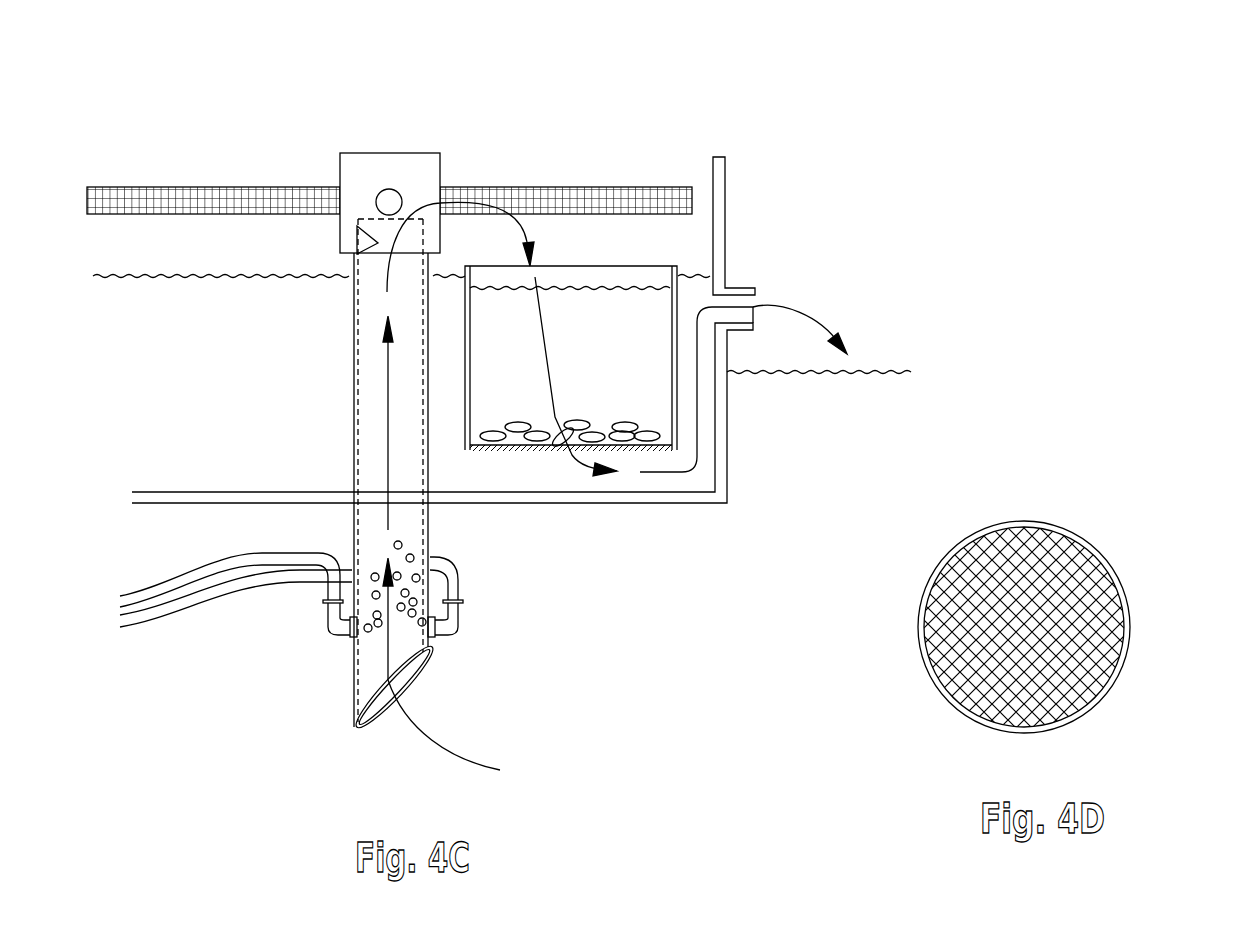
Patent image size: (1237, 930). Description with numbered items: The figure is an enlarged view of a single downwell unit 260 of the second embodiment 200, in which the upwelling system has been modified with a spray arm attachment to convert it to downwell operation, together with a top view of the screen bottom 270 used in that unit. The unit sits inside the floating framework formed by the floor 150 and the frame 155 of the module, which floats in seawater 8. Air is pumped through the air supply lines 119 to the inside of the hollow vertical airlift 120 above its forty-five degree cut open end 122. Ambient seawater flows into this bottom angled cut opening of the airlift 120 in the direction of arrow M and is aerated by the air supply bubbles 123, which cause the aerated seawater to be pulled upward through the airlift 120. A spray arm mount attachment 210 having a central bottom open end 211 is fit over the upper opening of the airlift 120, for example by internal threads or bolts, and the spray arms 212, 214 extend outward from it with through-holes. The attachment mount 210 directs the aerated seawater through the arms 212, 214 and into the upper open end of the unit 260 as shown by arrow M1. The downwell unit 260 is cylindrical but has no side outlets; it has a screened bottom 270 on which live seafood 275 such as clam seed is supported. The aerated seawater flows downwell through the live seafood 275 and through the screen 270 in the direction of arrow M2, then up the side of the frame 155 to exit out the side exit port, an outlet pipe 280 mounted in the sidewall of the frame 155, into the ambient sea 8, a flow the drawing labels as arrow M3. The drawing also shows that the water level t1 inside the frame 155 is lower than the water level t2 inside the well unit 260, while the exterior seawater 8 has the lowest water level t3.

In FIG. 4C, the second embodiment 200 is at (578, 74).
In FIG. 4C, the spray arm mount attachment 210 is at (378, 165).
In FIG. 4C, the central bottom open end 211 is at (377, 243).
In FIG. 4C, the spray arm 212 is at (177, 187).
In FIG. 4C, the spray arm 214 is at (580, 187).
In FIG. 4C, the frame 155 is at (718, 213).
In FIG. 4C, the outlet pipe 280 is at (737, 288).
In FIG. 4C, the downwell unit 260 is at (465, 345).
In FIG. 4C, the screened bottom 270 is at (620, 450).
In FIG. 4D, the screened bottom 270 is at (1077, 563).
In FIG. 4C, the live seafood 275 is at (573, 427).
In FIG. 4C, the floor 150 is at (590, 498).
In FIG. 4C, the airlift 120 is at (353, 364).
In FIG. 4C, the 45 degree cut open end 122 is at (430, 666).
In FIG. 4C, the air supply bubbles 123 is at (413, 561).
In FIG. 4C, the air supply lines 119 is at (220, 610).
In FIG. 4C, the arrow M is at (438, 737).
In FIG. 4C, the arrow M1 is at (530, 230).
In FIG. 4C, the arrow M2 is at (543, 367).
In FIG. 4C, the outlet water flow M3 is at (793, 313).
In FIG. 4C, the water level t1 is at (178, 278).
In FIG. 4C, the water level t2 is at (575, 289).
In FIG. 4C, the water level t3 is at (852, 372).
In FIG. 4C, the seawater 8 is at (803, 417).